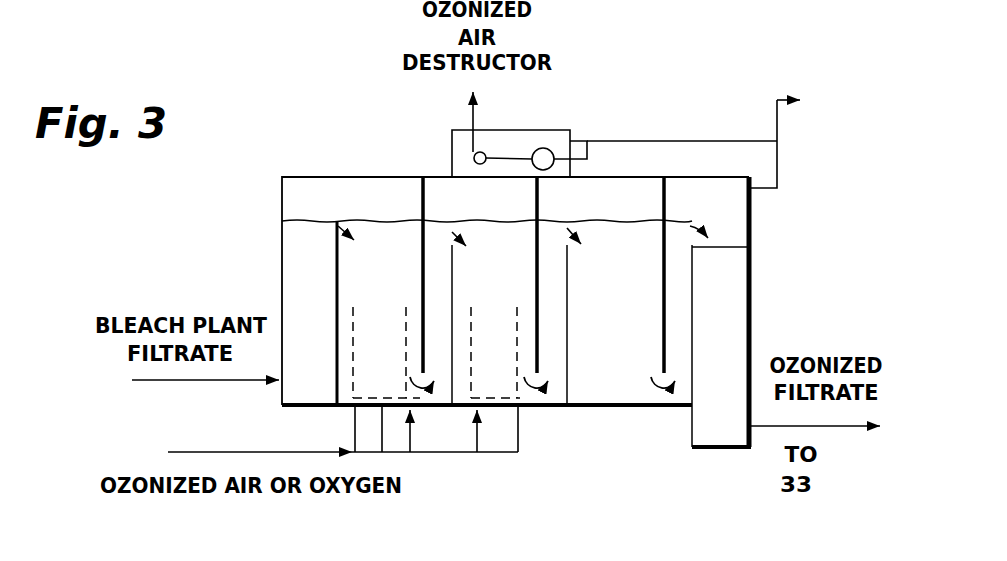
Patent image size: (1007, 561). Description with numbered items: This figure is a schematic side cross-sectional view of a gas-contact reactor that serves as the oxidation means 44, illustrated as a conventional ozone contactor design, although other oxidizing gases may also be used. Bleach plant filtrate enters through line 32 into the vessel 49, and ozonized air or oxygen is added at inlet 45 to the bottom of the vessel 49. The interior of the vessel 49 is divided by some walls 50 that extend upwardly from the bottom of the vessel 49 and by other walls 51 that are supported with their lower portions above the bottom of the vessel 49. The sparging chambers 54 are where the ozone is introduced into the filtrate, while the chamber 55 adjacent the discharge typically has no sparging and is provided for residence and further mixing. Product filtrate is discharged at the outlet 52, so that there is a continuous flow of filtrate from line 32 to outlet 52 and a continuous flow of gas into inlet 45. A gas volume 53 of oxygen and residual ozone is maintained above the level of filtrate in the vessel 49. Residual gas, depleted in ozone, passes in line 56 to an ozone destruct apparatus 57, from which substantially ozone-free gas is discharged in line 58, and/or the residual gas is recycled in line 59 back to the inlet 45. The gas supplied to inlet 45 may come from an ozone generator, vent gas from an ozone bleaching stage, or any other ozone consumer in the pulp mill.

The filtrate line 32 is at (265, 388).
The oxidation means 44 is at (829, 64).
The gas inlet 45 is at (445, 455).
The vessel 49 is at (282, 232).
The walls 50 is at (338, 288).
The walls 51 is at (424, 232).
The outlet 52 is at (749, 313).
The gas volume 53 is at (311, 190).
The sparging chambers 54 is at (364, 344).
The chamber 55 is at (599, 346).
The line 56 is at (634, 141).
The ozone destruct apparatus 57 is at (610, 95).
The line 58 is at (468, 112).
The recycle line 59 is at (777, 100).